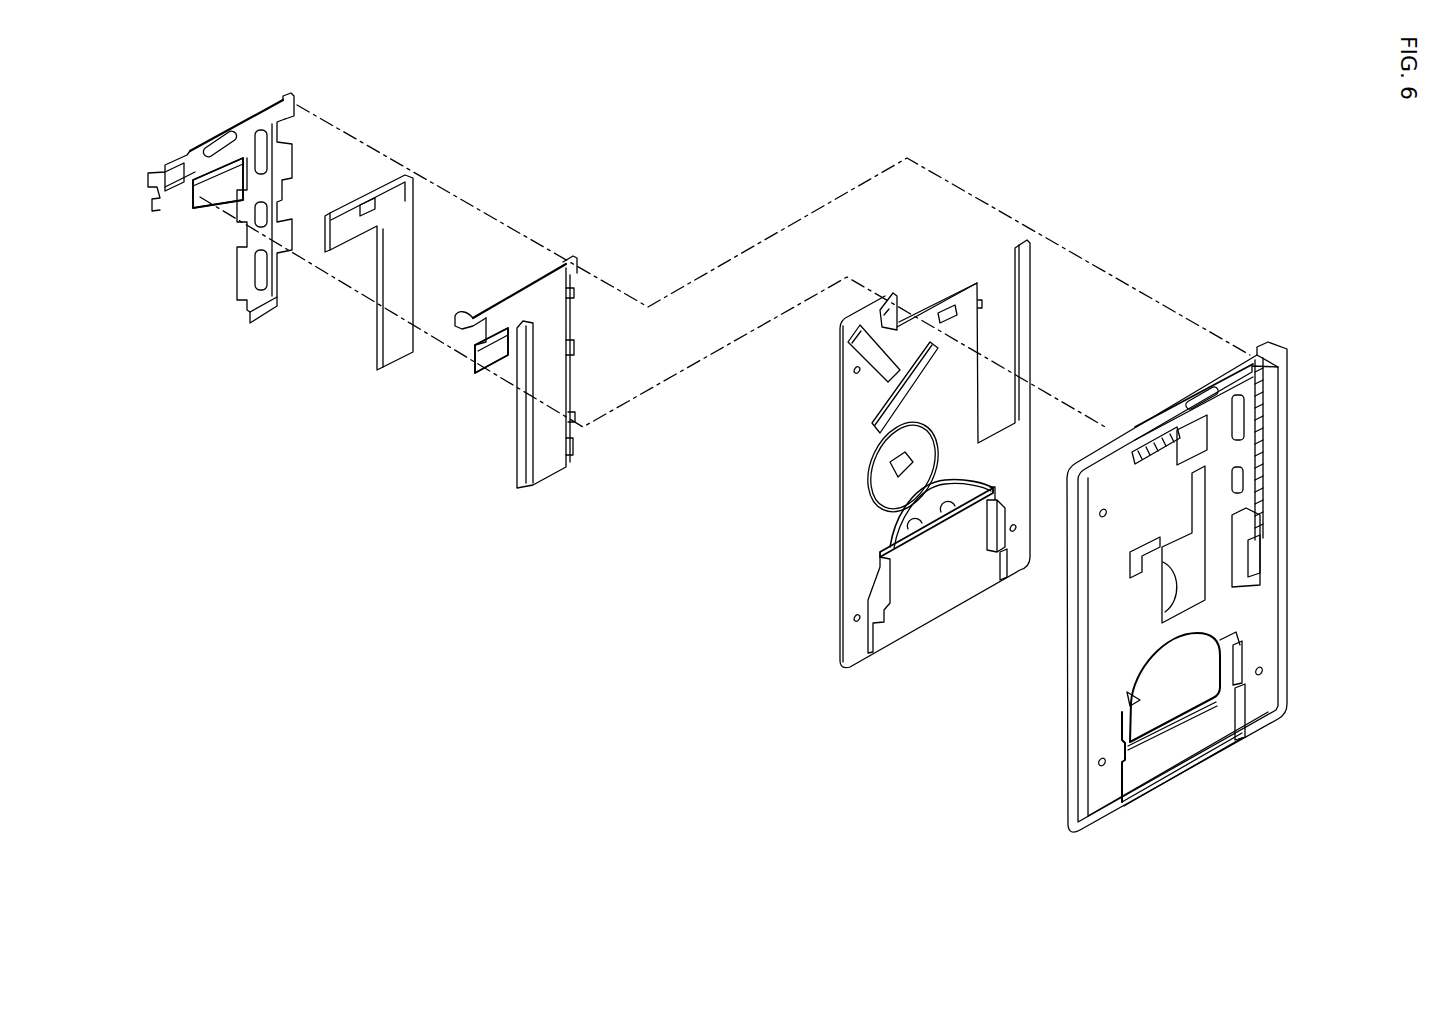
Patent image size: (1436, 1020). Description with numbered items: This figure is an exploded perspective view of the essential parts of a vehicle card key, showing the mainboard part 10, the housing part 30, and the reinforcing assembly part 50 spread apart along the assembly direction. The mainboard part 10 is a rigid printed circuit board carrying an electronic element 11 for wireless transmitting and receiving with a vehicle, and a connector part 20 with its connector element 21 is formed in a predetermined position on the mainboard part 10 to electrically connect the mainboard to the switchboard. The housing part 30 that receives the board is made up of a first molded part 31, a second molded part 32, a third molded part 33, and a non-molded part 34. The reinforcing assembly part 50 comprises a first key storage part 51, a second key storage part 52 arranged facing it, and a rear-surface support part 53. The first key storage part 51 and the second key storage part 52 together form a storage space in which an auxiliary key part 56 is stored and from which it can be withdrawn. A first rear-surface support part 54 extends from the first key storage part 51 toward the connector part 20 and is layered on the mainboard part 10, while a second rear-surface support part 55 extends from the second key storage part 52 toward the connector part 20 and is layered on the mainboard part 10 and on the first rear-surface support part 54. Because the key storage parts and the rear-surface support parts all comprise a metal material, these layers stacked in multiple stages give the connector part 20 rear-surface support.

The mainboard part 10 is at (915, 454).
The electronic element 11 is at (885, 404).
The connector part 20 is at (1033, 318).
The connector element 21 is at (953, 318).
The housing part 30 is at (1220, 567).
The first molded part 31 is at (1258, 602).
The second molded part 32 is at (1187, 528).
The third molded part 33 is at (1285, 642).
The non-molded part 34 is at (1188, 567).
The reinforcing assembly part 50 is at (402, 277).
The first key storage part 51 is at (493, 338).
The second key storage part 52 is at (303, 218).
The rear-surface support part 53 is at (348, 510).
The first rear-surface support part 54 is at (478, 357).
The second rear-surface support part 55 is at (207, 193).
The auxiliary key part 56 is at (402, 243).